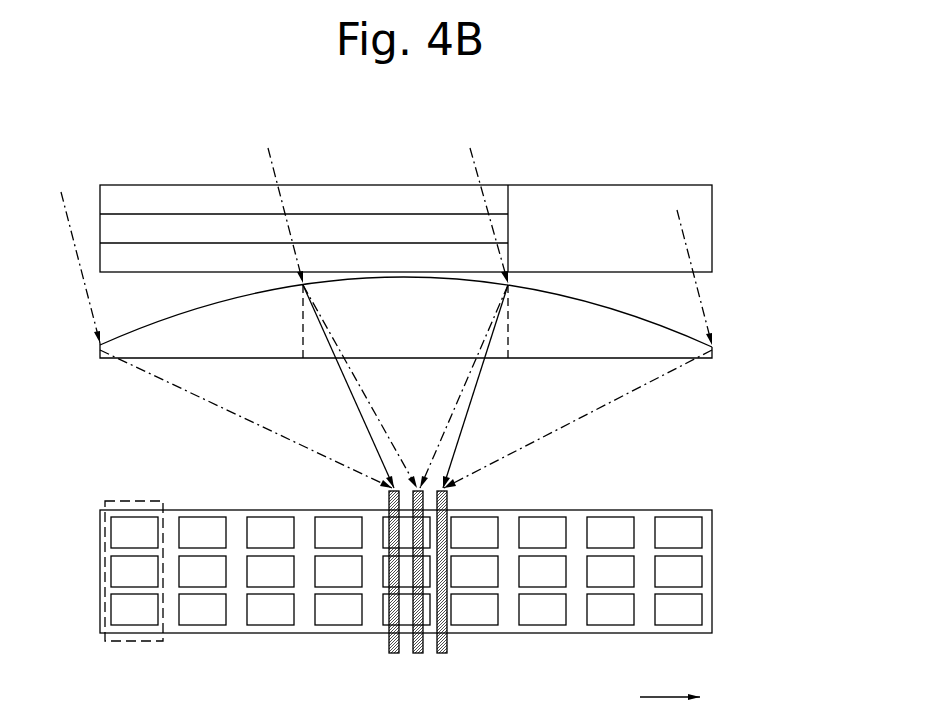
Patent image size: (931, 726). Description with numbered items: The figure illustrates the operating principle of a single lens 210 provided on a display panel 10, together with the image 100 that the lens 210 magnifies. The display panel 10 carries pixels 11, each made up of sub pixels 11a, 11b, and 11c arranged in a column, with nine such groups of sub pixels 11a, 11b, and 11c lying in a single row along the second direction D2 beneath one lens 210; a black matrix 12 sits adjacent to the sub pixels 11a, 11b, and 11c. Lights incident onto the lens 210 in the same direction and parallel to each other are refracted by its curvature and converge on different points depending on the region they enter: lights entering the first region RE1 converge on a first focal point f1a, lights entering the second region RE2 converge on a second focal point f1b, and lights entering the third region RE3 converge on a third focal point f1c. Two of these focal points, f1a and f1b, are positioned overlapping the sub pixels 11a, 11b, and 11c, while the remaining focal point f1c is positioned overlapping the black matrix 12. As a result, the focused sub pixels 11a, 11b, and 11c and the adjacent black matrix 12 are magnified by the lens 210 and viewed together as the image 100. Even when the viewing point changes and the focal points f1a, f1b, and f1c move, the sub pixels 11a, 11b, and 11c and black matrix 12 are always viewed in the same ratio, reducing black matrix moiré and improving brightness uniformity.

The image 100 is at (712, 228).
The lens 210 is at (449, 345).
The display panel 10 is at (412, 539).
The pixel 11 is at (101, 539).
The first sub pixel 11a is at (118, 533).
The second sub pixel 11b is at (118, 572).
The third sub pixel 11c is at (118, 609).
The black matrix 12 is at (170, 525).
The first region RE1 is at (278, 348).
The second region RE2 is at (396, 349).
The third region RE3 is at (537, 349).
The first focal point f1a is at (393, 653).
The second focal point f1b is at (418, 653).
The third focal point f1c is at (441, 653).
The second direction D2 is at (687, 698).